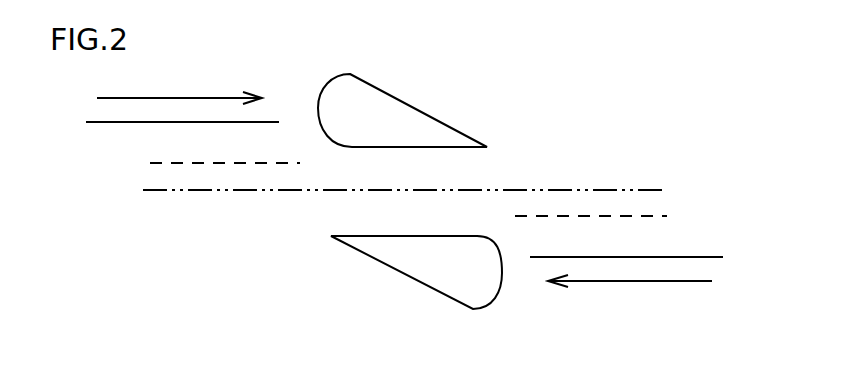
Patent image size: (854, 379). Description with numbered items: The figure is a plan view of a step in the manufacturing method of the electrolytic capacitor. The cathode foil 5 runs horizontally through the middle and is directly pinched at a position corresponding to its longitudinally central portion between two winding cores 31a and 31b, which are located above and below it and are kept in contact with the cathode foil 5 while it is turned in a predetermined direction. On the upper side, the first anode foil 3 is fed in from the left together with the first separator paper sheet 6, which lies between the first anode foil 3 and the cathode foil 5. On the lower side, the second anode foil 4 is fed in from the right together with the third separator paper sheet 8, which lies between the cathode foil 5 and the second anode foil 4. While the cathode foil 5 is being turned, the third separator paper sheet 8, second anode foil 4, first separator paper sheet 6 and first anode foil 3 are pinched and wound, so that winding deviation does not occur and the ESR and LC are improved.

The first anode foil 3 is at (97, 122).
The second anode foil 4 is at (707, 257).
The cathode foil 5 is at (598, 190).
The first separator paper sheet 6 is at (153, 163).
The third separator paper sheet 8 is at (633, 216).
The winding core 31a is at (383, 112).
The winding core 31b is at (435, 270).